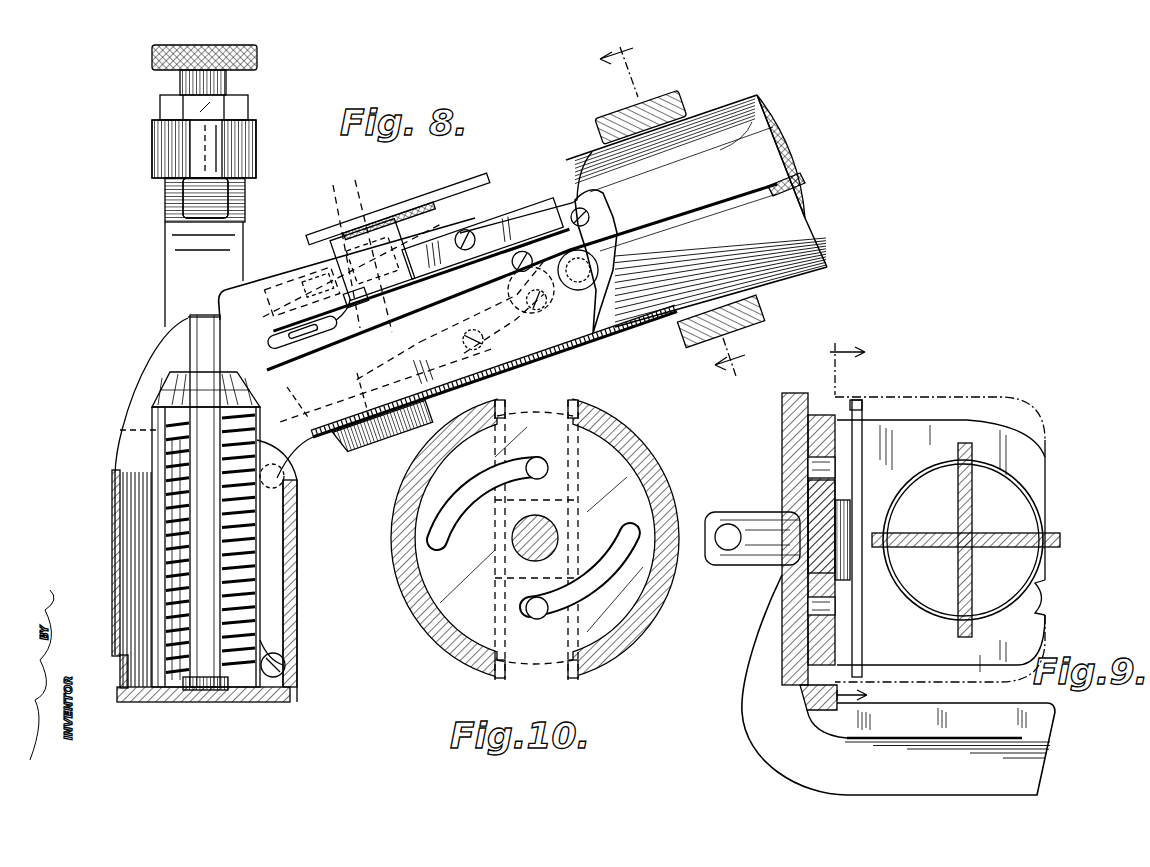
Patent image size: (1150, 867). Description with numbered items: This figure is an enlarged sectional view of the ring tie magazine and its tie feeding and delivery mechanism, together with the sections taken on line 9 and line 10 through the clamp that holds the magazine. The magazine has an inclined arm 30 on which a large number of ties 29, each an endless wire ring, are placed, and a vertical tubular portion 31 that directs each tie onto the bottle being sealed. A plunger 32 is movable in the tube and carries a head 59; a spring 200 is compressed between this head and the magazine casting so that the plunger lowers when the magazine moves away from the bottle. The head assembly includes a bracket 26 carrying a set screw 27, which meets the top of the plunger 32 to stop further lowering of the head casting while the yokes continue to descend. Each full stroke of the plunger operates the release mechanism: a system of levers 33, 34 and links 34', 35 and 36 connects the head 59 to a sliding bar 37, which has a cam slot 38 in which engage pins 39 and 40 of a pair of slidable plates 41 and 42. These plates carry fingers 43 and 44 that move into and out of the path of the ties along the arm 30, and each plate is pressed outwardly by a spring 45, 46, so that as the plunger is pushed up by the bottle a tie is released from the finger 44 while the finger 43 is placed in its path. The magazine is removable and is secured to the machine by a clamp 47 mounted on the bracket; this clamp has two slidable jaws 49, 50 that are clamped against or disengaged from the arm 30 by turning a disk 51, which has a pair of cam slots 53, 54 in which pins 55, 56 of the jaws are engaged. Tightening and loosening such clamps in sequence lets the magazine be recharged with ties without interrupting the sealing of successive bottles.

In FIG. 8, the section line 9— 9 is at (672, 211).
In FIG. 9, the section line 10— 10 is at (864, 514).
In FIG. 8, the bracket 26 is at (195, 280).
In FIG. 8, the set screw 27 is at (192, 218).
In FIG. 8, the ties 29 is at (370, 440).
In FIG. 8, the inclined magazine arm 30 is at (766, 112).
In FIG. 9, the inclined magazine arm 30 is at (970, 545).
In FIG. 8, the vertical tubular portion 31 is at (112, 583).
In FIG. 8, the plunger 32 is at (205, 700).
In FIG. 8, the lever 33 is at (550, 347).
In FIG. 8, the lever 34 is at (601, 283).
In FIG. 8, the link 34' is at (306, 575).
In FIG. 8, the link 35 is at (545, 303).
In FIG. 8, the link 36 is at (543, 213).
In FIG. 8, the sliding bar 37 is at (453, 230).
In FIG. 8, the cam slot 38 is at (498, 314).
In FIG. 8, the pin 39 is at (312, 265).
In FIG. 8, the pin 40 is at (380, 222).
In FIG. 8, the slidable plate 41 is at (343, 312).
In FIG. 8, the slidable plate 42 is at (362, 332).
In FIG. 8, the finger 43 is at (332, 278).
In FIG. 8, the finger 44 is at (345, 265).
In FIG. 8, the spring 45 is at (272, 340).
In FIG. 8, the spring 46 is at (515, 255).
In FIG. 10, the clamp 47 is at (420, 595).
In FIG. 9, the clamp 47 is at (758, 708).
In FIG. 8, the jaw 49 is at (680, 97).
In FIG. 10, the jaw 49 is at (505, 412).
In FIG. 9, the jaw 49 is at (875, 430).
In FIG. 8, the jaw 50 is at (756, 318).
In FIG. 10, the jaw 50 is at (500, 670).
In FIG. 9, the jaw 50 is at (1040, 625).
In FIG. 10, the disk 51 is at (610, 470).
In FIG. 9, the disk 51 is at (820, 432).
In FIG. 10, the cam slot 53 is at (455, 495).
In FIG. 9, the cam slot 53 is at (820, 492).
In FIG. 10, the cam slot 54 is at (615, 552).
In FIG. 9, the cam slot 54 is at (818, 585).
In FIG. 10, the pin 55 is at (548, 466).
In FIG. 9, the pin 55 is at (825, 465).
In FIG. 10, the pin 56 is at (537, 612).
In FIG. 9, the pin 56 is at (820, 606).
In FIG. 8, the head 59 is at (117, 680).
In FIG. 8, the spring 200 is at (160, 512).